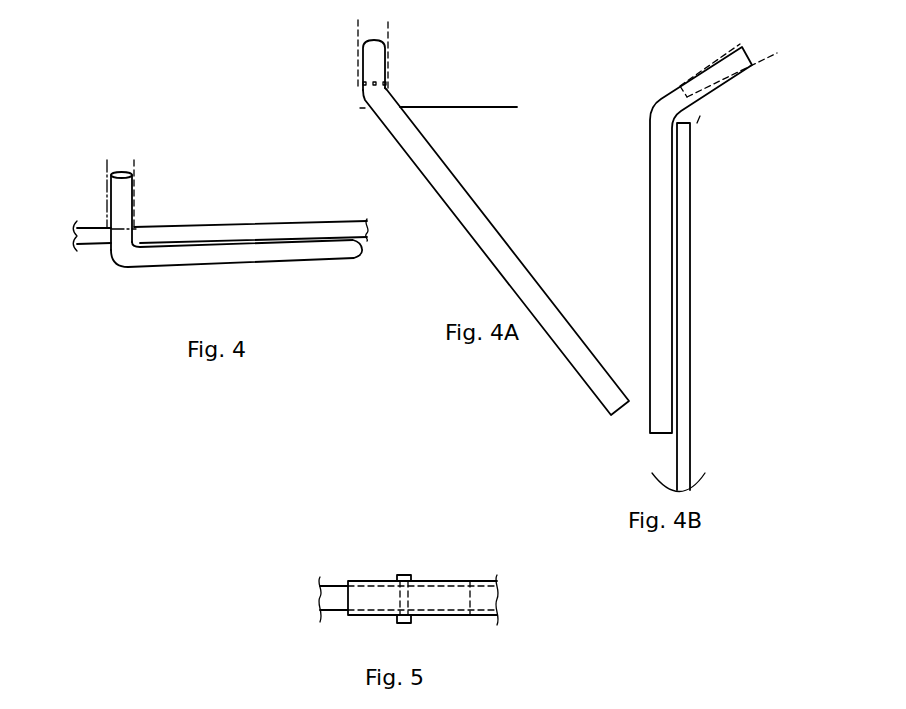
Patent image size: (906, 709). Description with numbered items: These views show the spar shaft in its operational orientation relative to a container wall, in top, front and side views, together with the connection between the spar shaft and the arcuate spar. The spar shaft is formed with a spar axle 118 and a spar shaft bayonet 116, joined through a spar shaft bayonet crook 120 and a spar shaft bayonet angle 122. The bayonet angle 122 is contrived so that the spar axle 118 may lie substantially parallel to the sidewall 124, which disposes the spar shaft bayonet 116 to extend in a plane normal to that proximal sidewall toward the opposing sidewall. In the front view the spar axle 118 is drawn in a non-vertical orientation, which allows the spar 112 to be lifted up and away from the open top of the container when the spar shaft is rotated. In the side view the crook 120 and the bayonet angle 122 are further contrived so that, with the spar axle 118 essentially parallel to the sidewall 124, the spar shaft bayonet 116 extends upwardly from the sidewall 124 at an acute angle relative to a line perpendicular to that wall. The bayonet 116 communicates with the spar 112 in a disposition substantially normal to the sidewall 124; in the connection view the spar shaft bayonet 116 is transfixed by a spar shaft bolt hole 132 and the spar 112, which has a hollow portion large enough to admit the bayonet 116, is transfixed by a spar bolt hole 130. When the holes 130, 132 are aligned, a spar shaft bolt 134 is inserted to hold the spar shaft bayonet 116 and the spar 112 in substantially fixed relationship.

In FIG. 4, the spar 112 is at (137, 163).
In FIG. 4A, the spar 112 is at (360, 30).
In FIG. 4B, the spar 112 is at (745, 38).
In FIG. 5, the spar 112 is at (490, 582).
In FIG. 4, the spar shaft bayonet 116 is at (122, 205).
In FIG. 4A, the spar shaft bayonet 116 is at (372, 60).
In FIG. 4B, the spar shaft bayonet 116 is at (698, 78).
In FIG. 5, the spar shaft bayonet 116 is at (334, 590).
In FIG. 4, the spar axle 118 is at (323, 257).
In FIG. 4A, the spar axle 118 is at (482, 250).
In FIG. 4B, the spar axle 118 is at (650, 315).
In FIG. 4B, the spar shaft bayonet crook 120 is at (658, 108).
In FIG. 4B, the spar shaft bayonet angle 122 is at (703, 124).
In FIG. 4, the sidewall 124 is at (315, 228).
In FIG. 4A, the sidewall 124 is at (517, 107).
In FIG. 4B, the sidewall 124 is at (688, 195).
In FIG. 5, the spar bolt hole 130 is at (418, 582).
In FIG. 5, the spar shaft bolt hole 132 is at (395, 592).
In FIG. 5, the spar shaft bolt 134 is at (412, 620).